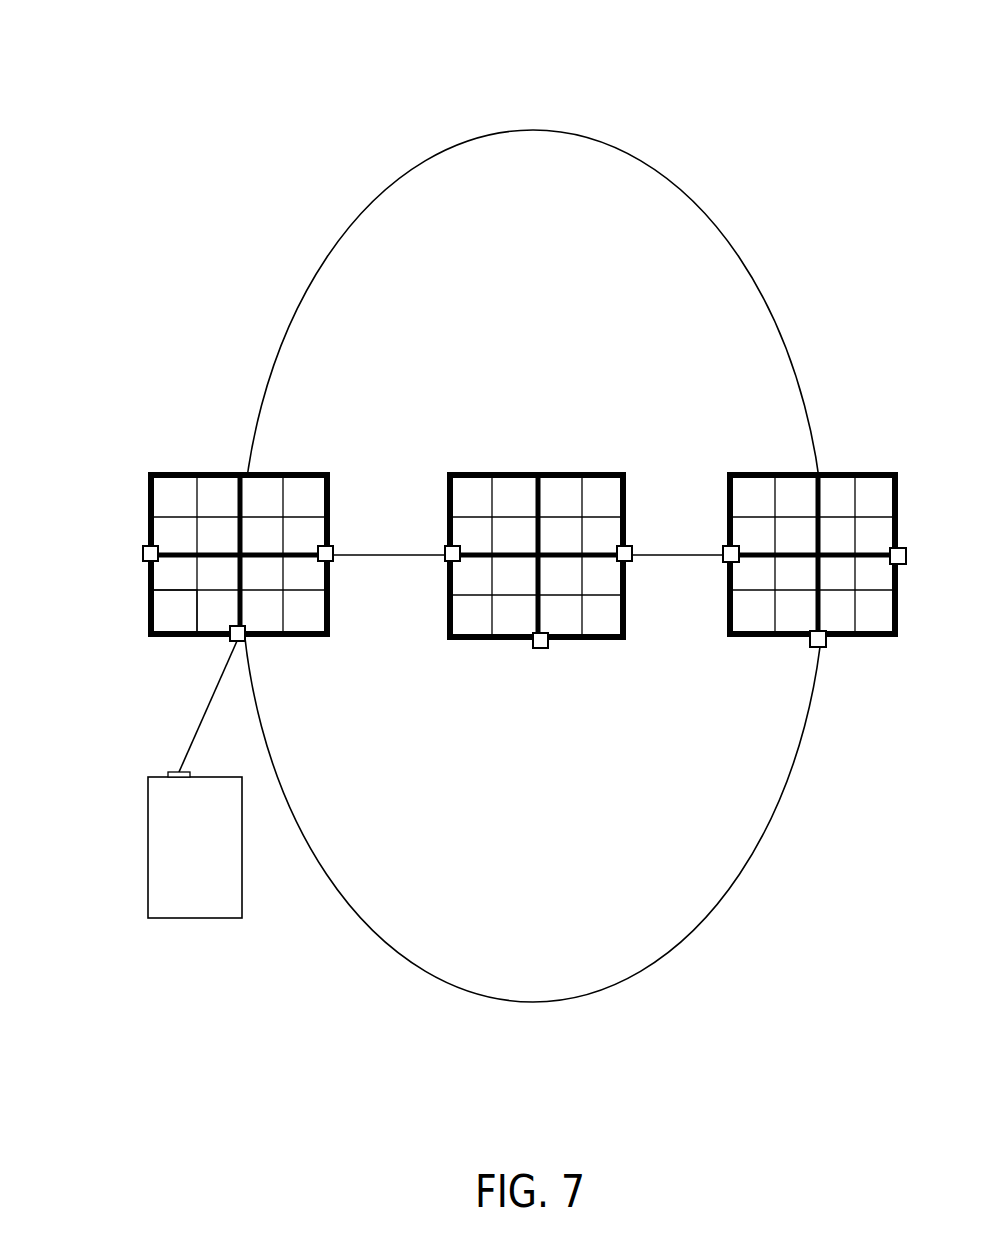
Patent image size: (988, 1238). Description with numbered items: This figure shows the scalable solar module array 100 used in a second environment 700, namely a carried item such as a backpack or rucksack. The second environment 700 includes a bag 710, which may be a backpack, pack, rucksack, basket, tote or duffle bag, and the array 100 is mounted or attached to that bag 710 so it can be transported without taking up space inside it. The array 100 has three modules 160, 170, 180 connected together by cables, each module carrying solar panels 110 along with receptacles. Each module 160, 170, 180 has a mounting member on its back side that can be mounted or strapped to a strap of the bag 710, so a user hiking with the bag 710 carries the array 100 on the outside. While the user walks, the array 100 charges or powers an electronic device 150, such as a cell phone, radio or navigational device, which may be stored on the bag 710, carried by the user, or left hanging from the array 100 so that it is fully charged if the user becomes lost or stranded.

The second environment 700 is at (174, 81).
The bag 710 is at (738, 250).
The scalable solar module array 100 is at (489, 299).
The module 160 is at (201, 512).
The module 170 is at (524, 441).
The module 180 is at (782, 452).
The solar panels 110 is at (167, 612).
The electronic device 150 is at (148, 825).